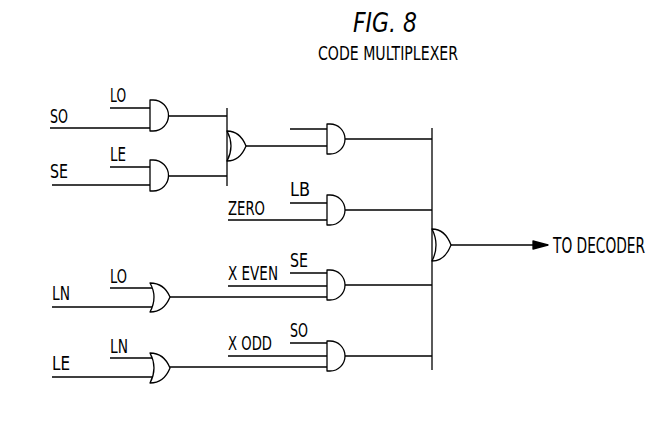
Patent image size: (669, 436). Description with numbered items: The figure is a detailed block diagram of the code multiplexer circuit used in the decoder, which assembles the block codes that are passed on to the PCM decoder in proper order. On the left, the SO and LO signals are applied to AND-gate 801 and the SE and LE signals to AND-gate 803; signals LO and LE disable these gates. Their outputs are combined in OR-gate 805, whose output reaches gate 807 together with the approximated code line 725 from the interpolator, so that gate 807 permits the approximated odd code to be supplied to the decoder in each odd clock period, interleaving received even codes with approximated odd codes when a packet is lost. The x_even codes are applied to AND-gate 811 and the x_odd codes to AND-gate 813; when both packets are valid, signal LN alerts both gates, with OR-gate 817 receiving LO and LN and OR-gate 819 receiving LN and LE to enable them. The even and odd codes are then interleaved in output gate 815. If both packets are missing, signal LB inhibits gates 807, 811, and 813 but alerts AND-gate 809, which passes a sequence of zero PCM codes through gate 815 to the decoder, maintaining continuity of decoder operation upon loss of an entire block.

The AND-gate 801 is at (161, 100).
The AND-gate 803 is at (158, 191).
The OR-gate 805 is at (232, 131).
The interpolator output line 725 is at (297, 129).
The gate 807 is at (334, 124).
The AND-gate 809 is at (338, 195).
The AND-gate 811 is at (336, 270).
The AND-gate 813 is at (338, 341).
The gate 815 is at (440, 230).
The OR-gate 817 is at (162, 283).
The OR-gate 819 is at (163, 383).